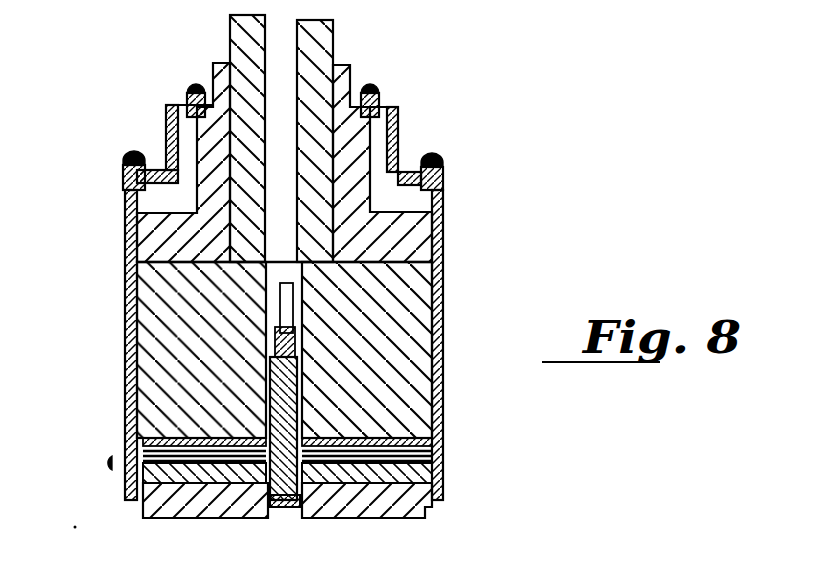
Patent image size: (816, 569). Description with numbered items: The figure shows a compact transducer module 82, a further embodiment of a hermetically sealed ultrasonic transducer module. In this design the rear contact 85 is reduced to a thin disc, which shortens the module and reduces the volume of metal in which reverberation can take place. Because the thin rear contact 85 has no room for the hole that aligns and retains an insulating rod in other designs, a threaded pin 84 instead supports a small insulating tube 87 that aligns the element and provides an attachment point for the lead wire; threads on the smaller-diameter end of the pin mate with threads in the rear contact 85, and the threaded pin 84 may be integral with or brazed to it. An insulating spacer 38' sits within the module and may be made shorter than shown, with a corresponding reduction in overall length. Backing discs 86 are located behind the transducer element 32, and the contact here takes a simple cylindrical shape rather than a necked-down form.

The compact transducer module 82 is at (493, 252).
The insulating spacer 38' is at (327, 350).
The threaded pin 84 is at (270, 378).
The rear contact 85 is at (128, 440).
The backing discs 86 is at (112, 463).
The transducer element 32 is at (432, 475).
The insulating tube 87 is at (307, 495).